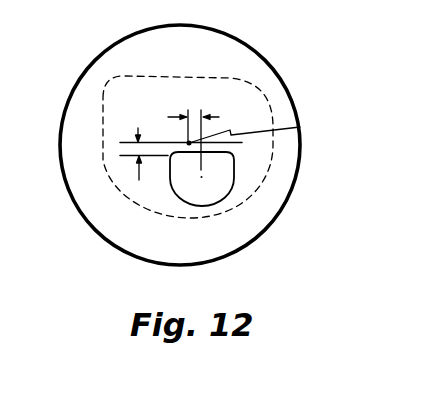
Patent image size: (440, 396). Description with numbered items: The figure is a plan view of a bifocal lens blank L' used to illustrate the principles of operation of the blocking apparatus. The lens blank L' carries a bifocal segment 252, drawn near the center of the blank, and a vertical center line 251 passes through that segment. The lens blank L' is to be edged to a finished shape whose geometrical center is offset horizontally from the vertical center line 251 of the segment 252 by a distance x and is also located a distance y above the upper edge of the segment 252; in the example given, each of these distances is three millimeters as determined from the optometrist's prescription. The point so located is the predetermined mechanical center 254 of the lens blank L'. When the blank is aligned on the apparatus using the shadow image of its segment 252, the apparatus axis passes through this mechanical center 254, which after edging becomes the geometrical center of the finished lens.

The bifocal lens blank L' is at (193, 145).
The vertical center line 251 is at (300, 127).
The segment 252 is at (235, 179).
The predetermined mechanical center 254 is at (188, 142).
The distance X x is at (191, 118).
The distance Y y is at (133, 150).